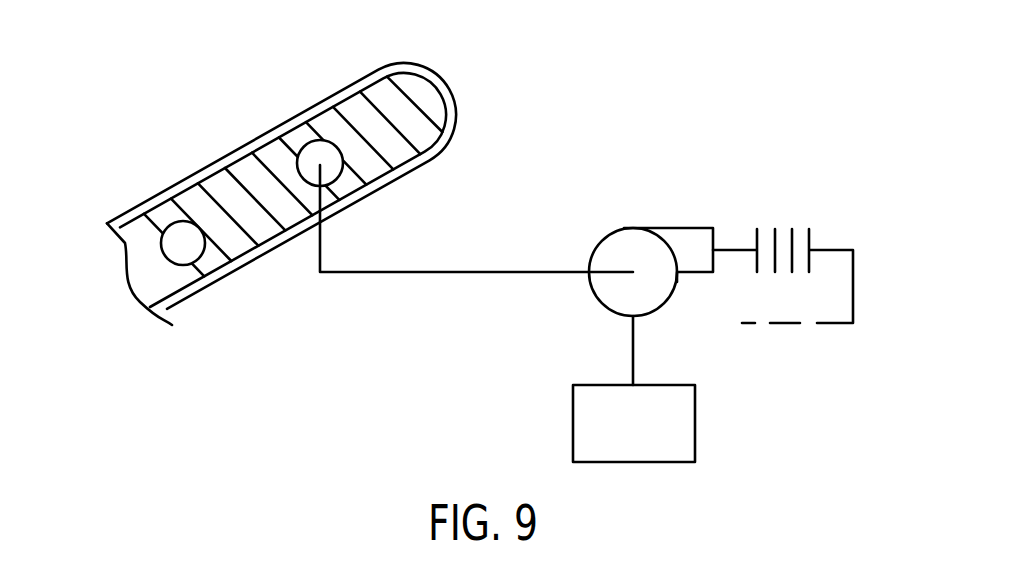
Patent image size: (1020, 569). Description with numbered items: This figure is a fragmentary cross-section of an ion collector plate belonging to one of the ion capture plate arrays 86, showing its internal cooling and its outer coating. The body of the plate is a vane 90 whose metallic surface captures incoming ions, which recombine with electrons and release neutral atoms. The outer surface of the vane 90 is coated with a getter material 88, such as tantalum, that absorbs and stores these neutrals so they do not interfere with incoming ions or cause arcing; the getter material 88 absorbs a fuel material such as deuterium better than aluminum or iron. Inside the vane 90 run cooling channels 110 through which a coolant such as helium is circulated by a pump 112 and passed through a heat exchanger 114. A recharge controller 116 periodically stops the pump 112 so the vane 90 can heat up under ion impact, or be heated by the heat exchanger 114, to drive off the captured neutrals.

The ion capture plate array 86 is at (312, 163).
The getter material 88 is at (427, 63).
The vane 90 is at (410, 126).
The cooling channels 110 is at (166, 222).
The pump 112 is at (662, 228).
The heat exchanger 114 is at (757, 238).
The recharge controller 116 is at (668, 420).